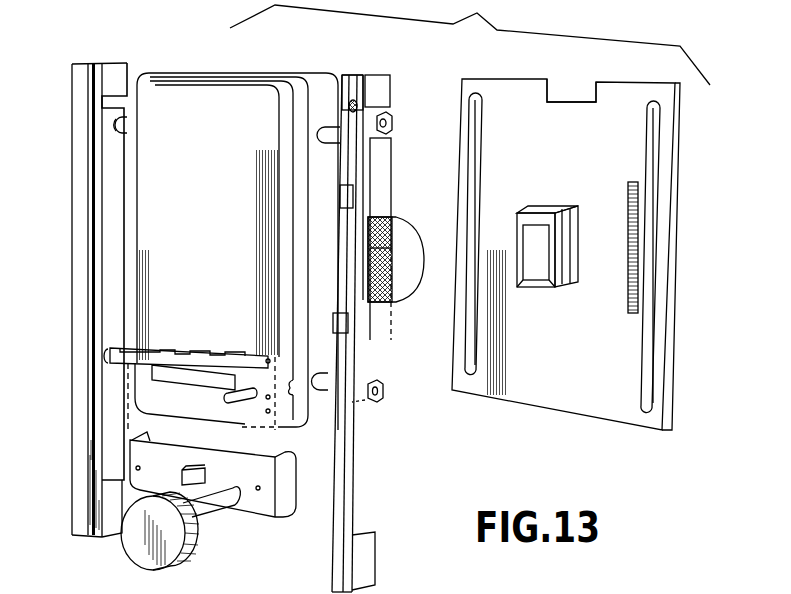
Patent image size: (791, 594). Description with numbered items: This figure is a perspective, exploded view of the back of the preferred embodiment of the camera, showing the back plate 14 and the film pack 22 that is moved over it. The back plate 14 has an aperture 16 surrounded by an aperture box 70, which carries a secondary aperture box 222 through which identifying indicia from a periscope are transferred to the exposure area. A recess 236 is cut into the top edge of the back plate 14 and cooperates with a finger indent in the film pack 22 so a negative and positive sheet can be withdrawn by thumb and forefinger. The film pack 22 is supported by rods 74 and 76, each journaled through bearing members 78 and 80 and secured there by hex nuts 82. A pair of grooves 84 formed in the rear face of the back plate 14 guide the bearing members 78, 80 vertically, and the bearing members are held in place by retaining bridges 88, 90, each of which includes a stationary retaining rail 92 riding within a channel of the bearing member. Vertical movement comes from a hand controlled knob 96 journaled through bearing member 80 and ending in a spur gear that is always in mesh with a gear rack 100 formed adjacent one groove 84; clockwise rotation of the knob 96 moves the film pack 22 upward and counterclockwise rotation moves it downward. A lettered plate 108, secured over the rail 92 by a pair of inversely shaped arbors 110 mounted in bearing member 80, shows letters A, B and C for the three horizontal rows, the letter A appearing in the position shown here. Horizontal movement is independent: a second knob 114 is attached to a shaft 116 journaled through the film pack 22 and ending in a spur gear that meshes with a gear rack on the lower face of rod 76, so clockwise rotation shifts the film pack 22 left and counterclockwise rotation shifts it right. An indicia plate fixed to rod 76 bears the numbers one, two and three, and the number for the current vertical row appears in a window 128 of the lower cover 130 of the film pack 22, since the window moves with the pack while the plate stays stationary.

The retaining bridge 88 is at (68, 509).
The bearing member 78 is at (106, 249).
The rod 74 is at (124, 127).
The film pack 22 is at (220, 194).
The rod 76 is at (112, 357).
The shaft 116 is at (232, 410).
The lower cover 130 is at (246, 510).
The window 128 is at (188, 470).
The second knob 114 is at (150, 550).
The stationary retaining rail 92 is at (340, 494).
The retaining bridge 90 is at (325, 580).
The lettered plate 108 is at (345, 303).
The bearing member 80 is at (383, 172).
The hex nut 82 is at (393, 126).
The arbor 110 is at (358, 201).
The hand controlled knob 96 is at (402, 252).
The back plate 14 is at (543, 131).
The recess 236 is at (549, 94).
The groove 84 is at (474, 176).
The secondary aperture box 222 is at (540, 214).
The aperture 16 is at (530, 266).
The aperture box 70 is at (552, 286).
The gear rack 100 is at (640, 255).